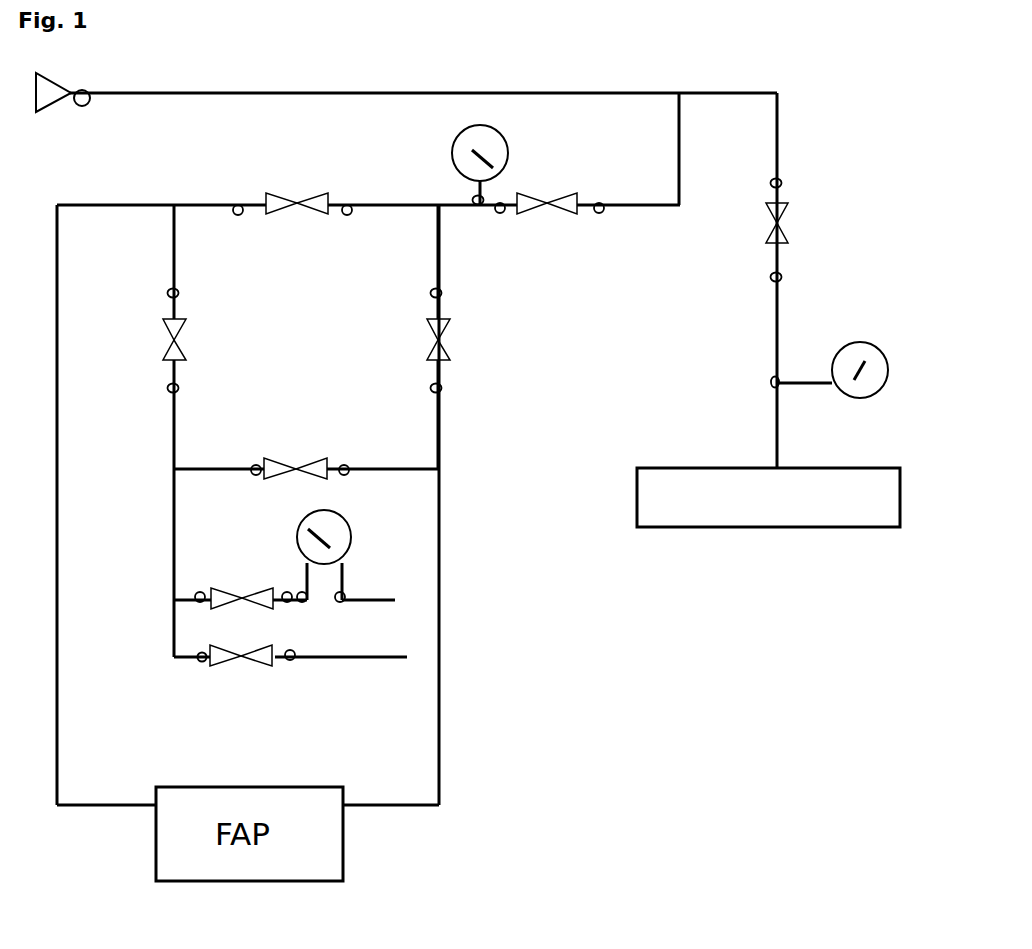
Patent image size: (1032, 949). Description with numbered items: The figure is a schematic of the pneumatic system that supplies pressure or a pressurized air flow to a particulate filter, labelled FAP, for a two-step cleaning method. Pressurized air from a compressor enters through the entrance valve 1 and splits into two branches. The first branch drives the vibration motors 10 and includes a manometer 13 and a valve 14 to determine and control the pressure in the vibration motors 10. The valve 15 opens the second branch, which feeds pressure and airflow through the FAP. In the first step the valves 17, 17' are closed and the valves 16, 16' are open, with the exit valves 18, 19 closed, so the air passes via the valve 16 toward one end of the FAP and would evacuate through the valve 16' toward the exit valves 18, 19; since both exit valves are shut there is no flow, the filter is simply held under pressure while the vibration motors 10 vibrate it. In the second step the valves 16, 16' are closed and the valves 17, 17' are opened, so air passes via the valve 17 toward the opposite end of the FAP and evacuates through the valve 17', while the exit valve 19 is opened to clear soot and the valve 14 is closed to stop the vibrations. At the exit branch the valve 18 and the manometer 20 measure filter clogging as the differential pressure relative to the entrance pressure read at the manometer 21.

The entrance valve 1 is at (63, 110).
The vibration motors 10 is at (768, 513).
The manometer 13 is at (851, 370).
The valve 14 is at (795, 230).
The valve 15 is at (549, 186).
The valve 16 is at (300, 451).
The valve 16' is at (292, 188).
The valve 17 is at (461, 340).
The valve 17' is at (194, 340).
The valve 18 is at (242, 582).
The exit valve 19 is at (239, 647).
The manometer 20 is at (352, 569).
The manometer 21 is at (494, 164).